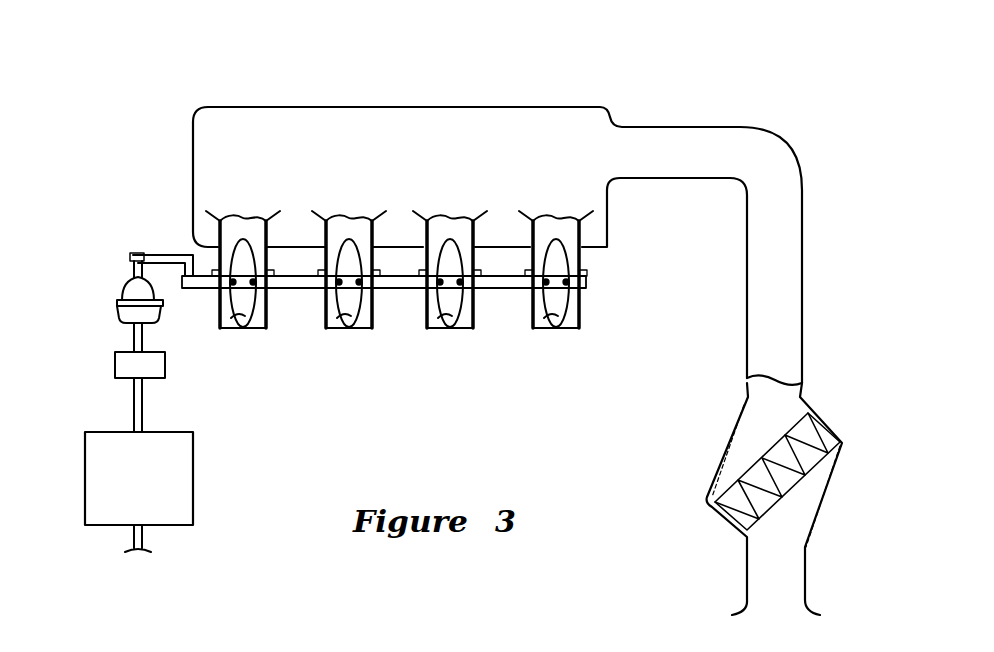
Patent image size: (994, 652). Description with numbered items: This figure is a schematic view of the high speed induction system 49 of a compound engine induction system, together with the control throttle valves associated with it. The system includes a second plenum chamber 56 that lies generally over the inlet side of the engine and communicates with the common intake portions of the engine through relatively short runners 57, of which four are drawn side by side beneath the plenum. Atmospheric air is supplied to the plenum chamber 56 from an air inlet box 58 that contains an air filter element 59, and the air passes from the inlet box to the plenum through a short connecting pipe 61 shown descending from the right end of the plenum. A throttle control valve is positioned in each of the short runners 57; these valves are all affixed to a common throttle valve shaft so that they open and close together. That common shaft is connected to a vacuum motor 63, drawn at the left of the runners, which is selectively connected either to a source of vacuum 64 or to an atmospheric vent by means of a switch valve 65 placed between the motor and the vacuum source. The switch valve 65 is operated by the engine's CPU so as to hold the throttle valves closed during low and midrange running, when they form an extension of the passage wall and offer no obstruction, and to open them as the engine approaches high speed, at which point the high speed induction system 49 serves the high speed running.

The high speed induction system 49 is at (718, 115).
The second plenum chamber 56 is at (470, 135).
The short runners 57 is at (377, 318).
The air inlet box 58 is at (791, 469).
The air filter element 59 is at (714, 503).
The short connecting pipe 61 is at (805, 228).
The vacuum motor 63 is at (133, 292).
The source of vacuum 64 is at (85, 483).
The switch valve 65 is at (115, 367).